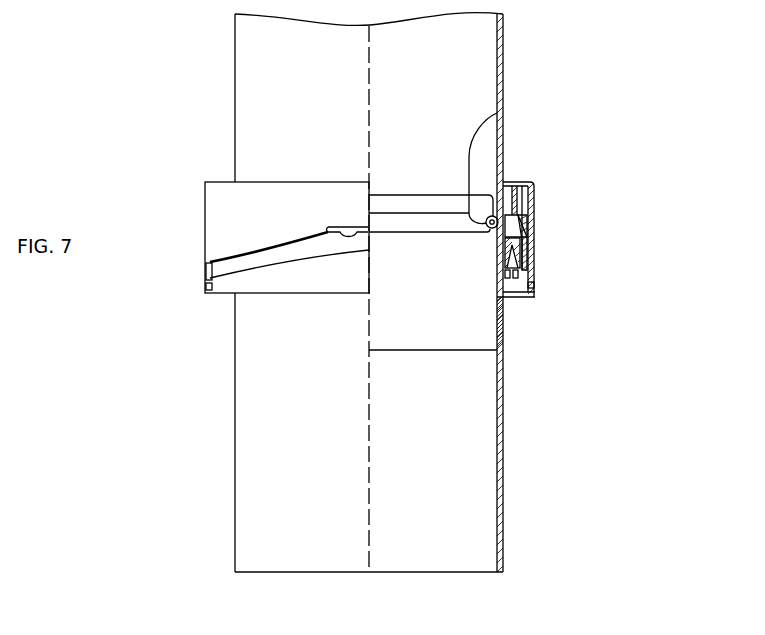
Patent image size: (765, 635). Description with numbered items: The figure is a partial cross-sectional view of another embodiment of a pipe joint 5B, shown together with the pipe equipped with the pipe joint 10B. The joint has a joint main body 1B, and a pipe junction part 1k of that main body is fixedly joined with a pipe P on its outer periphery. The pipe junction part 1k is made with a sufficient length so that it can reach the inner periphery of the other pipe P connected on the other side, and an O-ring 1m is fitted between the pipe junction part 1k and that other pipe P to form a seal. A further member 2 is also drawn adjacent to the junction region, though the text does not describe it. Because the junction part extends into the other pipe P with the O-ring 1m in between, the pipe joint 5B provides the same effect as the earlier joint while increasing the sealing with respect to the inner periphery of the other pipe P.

The pipe P is at (503, 45).
The O-ring 1m is at (503, 115).
The cover member 2 is at (546, 189).
The pipe joint 5B is at (560, 234).
The joint main body 1B is at (531, 306).
The pipe junction part 1k is at (497, 320).
The pipe equipped with the pipe joint 10B is at (560, 437).